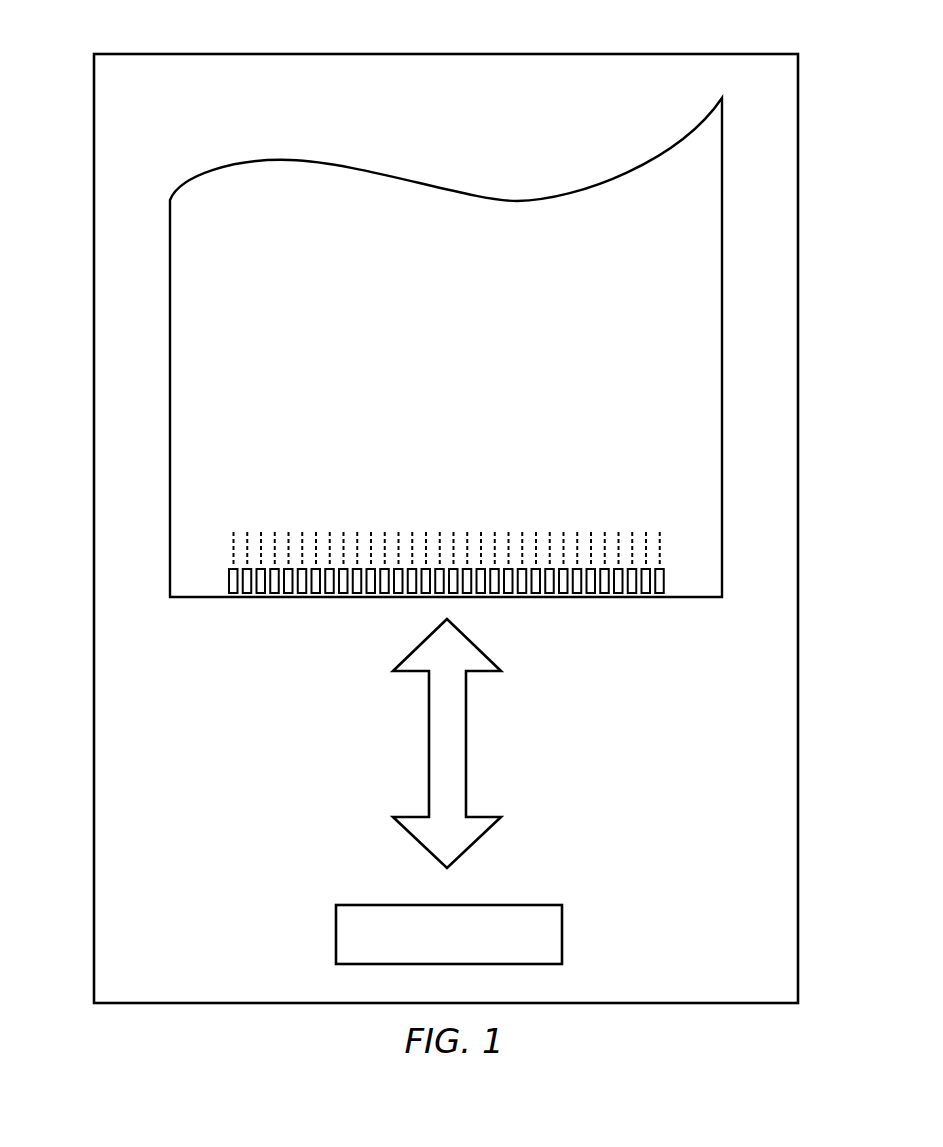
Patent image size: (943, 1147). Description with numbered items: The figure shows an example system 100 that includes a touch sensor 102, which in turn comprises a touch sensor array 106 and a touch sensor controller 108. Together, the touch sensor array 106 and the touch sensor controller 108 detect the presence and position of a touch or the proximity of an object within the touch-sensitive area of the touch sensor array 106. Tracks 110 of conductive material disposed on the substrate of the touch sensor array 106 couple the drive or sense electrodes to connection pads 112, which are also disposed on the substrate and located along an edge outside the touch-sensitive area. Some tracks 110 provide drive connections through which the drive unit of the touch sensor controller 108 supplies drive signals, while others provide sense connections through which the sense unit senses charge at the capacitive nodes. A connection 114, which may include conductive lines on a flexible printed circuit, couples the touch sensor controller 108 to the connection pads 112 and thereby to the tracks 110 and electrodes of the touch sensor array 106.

The system 100 is at (160, 9).
The touch sensor 102 is at (572, 53).
The touch sensor array 106 is at (205, 326).
The touch sensor controller 108 is at (336, 931).
The tracks 110 is at (222, 549).
The connection pads 112 is at (220, 578).
The connection 114 is at (428, 741).